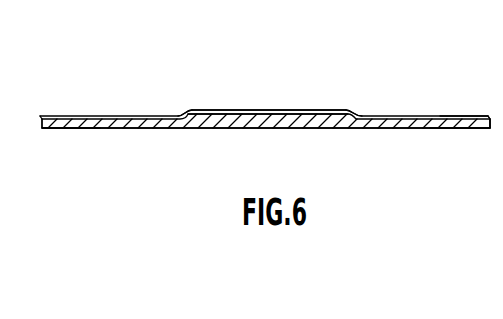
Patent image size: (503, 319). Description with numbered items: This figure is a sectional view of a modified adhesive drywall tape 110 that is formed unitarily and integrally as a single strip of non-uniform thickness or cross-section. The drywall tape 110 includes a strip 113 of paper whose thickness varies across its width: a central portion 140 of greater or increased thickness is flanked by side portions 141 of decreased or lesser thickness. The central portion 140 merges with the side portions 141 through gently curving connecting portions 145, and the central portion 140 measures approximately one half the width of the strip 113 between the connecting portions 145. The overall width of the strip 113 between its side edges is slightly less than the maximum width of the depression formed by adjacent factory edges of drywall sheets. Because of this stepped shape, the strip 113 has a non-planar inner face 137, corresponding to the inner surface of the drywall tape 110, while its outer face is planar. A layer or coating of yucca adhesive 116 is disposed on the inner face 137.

The adhesive drywall tape 110 is at (263, 100).
The strip 113 is at (133, 132).
The yucca adhesive 116 is at (460, 117).
The inner face 137 is at (217, 115).
The central portion 140 is at (222, 130).
The side portions 141 is at (82, 130).
The connecting portions 145 is at (182, 112).